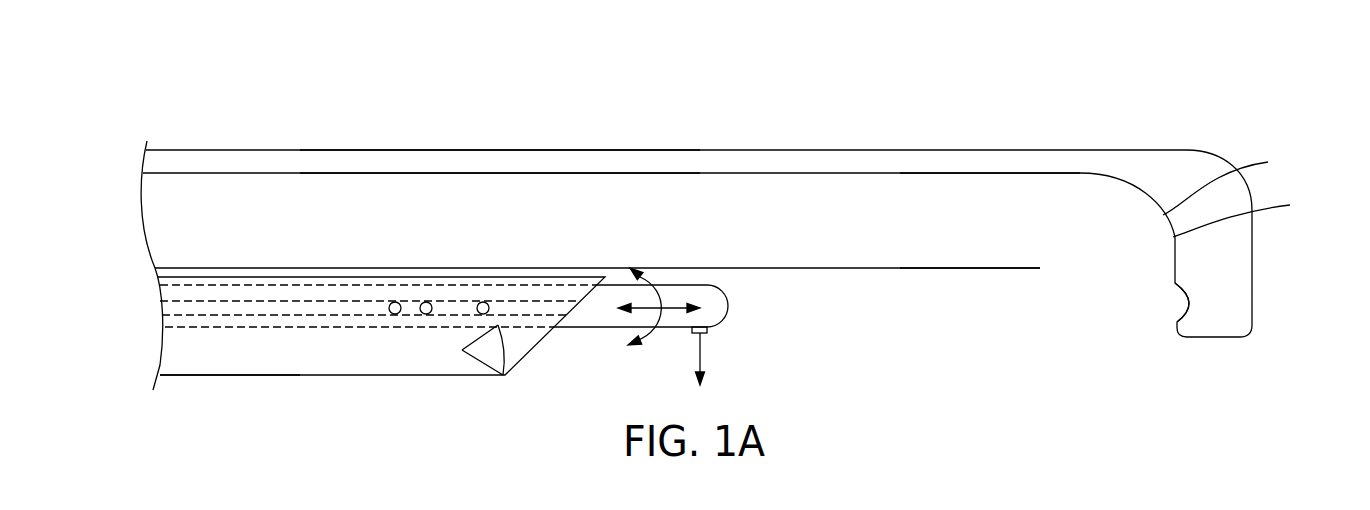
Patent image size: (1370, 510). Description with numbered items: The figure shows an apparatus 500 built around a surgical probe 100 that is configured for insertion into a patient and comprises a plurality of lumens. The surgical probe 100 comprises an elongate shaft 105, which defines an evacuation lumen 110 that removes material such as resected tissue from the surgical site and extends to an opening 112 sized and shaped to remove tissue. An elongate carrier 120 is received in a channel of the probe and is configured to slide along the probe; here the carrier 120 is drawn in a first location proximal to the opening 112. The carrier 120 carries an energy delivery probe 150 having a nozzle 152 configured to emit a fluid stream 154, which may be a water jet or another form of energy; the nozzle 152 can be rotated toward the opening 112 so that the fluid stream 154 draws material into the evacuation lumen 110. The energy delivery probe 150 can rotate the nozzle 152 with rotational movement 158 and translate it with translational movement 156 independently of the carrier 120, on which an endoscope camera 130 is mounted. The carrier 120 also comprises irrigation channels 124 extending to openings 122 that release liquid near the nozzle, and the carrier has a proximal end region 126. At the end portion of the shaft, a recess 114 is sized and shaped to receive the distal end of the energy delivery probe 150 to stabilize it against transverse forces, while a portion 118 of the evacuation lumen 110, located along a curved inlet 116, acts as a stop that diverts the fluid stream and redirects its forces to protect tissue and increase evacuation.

The apparatus 500 is at (213, 65).
The surgical probe 100 is at (541, 103).
The elongate shaft 105 is at (628, 167).
The evacuation lumen 110 is at (975, 208).
The opening 112 is at (1097, 253).
The recess 114 is at (1196, 303).
The curved inlet 116 is at (1238, 181).
The portion of the evacuation lumen 118 is at (1253, 213).
The carrier 120 is at (297, 357).
The openings 122 is at (393, 302).
The irrigation channels 124 is at (337, 315).
The handle end 126 is at (180, 327).
The endoscope camera 130 is at (477, 363).
The energy delivery probe 150 is at (712, 303).
The nozzle 152 is at (707, 331).
The fluid stream 154 is at (696, 350).
The translational movement 156 is at (664, 306).
The rotational movement 158 is at (631, 268).